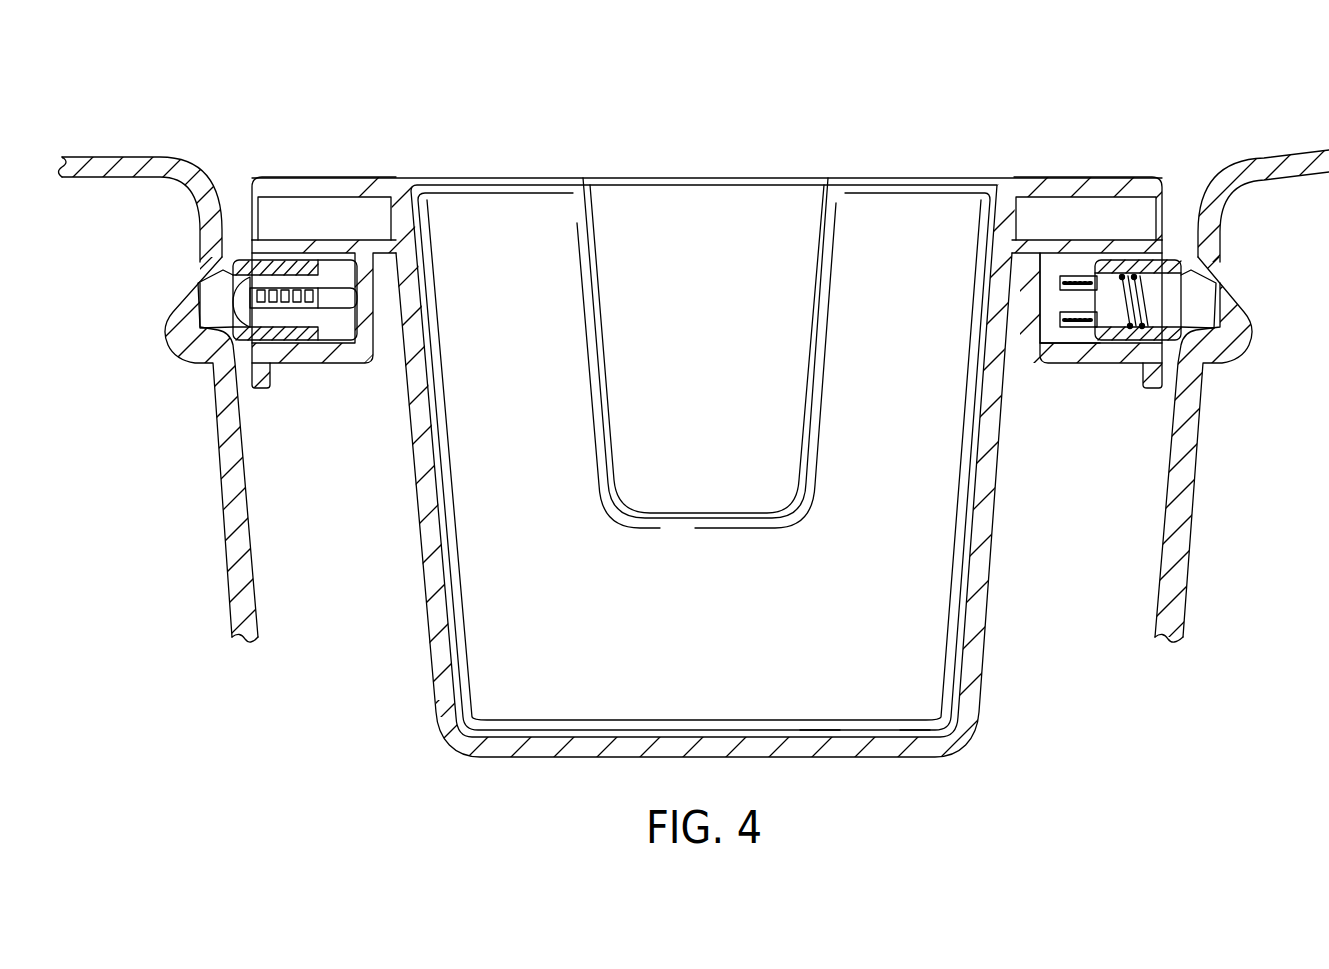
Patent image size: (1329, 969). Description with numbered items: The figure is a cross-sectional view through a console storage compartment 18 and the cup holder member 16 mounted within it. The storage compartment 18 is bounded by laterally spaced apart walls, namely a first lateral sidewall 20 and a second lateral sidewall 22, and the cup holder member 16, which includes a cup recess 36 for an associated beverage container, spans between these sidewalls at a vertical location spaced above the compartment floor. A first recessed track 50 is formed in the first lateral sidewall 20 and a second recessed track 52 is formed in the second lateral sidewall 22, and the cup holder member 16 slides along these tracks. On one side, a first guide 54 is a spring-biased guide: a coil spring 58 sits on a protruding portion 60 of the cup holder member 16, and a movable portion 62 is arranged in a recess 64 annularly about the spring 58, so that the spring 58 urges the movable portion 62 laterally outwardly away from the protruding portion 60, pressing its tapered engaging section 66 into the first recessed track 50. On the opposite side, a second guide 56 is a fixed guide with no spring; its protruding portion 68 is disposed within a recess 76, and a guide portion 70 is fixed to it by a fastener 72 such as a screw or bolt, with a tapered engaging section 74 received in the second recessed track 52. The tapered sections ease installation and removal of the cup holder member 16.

The cup holder member 16 is at (128, 92).
The storage compartment 18 is at (355, 575).
The first lateral sidewall 20 is at (1180, 500).
The second lateral sidewall 22 is at (242, 498).
The cup recess 36 is at (847, 731).
The first recessed track 50 is at (1150, 347).
The second recessed track 52 is at (257, 345).
The first guide 54 is at (1178, 222).
The second guide 56 is at (236, 223).
The spring 58 is at (1123, 340).
The protruding portion 60 is at (1063, 357).
The movable portion 62 is at (1130, 268).
The recess 64 is at (1068, 268).
The tapered engaging section 66 is at (1200, 305).
The protruding portion 68 is at (348, 325).
The guide portion 70 is at (283, 262).
The fastener 72 is at (285, 300).
The tapered engaging section 74 is at (224, 300).
The recess 76 is at (365, 266).